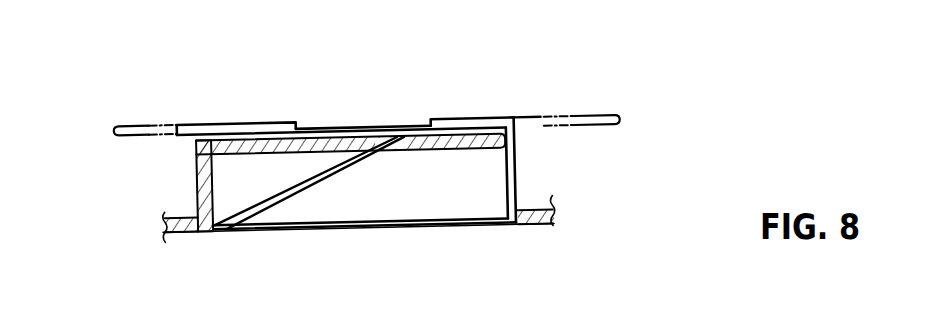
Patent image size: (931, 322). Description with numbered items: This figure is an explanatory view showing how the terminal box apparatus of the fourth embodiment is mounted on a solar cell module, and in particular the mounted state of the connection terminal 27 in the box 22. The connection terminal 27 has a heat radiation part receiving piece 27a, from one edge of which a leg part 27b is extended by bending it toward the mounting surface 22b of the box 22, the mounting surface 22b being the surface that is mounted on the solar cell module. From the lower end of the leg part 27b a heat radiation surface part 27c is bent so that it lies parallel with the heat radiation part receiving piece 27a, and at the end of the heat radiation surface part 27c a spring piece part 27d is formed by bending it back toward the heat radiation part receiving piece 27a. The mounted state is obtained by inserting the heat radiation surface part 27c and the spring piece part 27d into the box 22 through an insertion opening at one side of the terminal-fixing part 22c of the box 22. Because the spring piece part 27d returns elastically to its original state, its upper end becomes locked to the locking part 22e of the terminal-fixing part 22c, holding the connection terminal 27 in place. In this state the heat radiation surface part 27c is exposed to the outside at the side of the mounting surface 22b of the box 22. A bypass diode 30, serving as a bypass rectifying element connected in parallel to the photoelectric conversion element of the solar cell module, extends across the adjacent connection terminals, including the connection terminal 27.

The box 22 is at (532, 224).
The mounting surface 22b is at (196, 232).
The terminal-fixing part 22c is at (196, 180).
The locking part 22e is at (368, 127).
The connection terminal 27 is at (398, 126).
The heat radiation part receiving piece 27a is at (248, 123).
The leg part 27b is at (517, 161).
The heat radiation surface part 27c is at (390, 228).
The spring piece part 27d is at (325, 182).
The bypass diode 30 is at (140, 124).